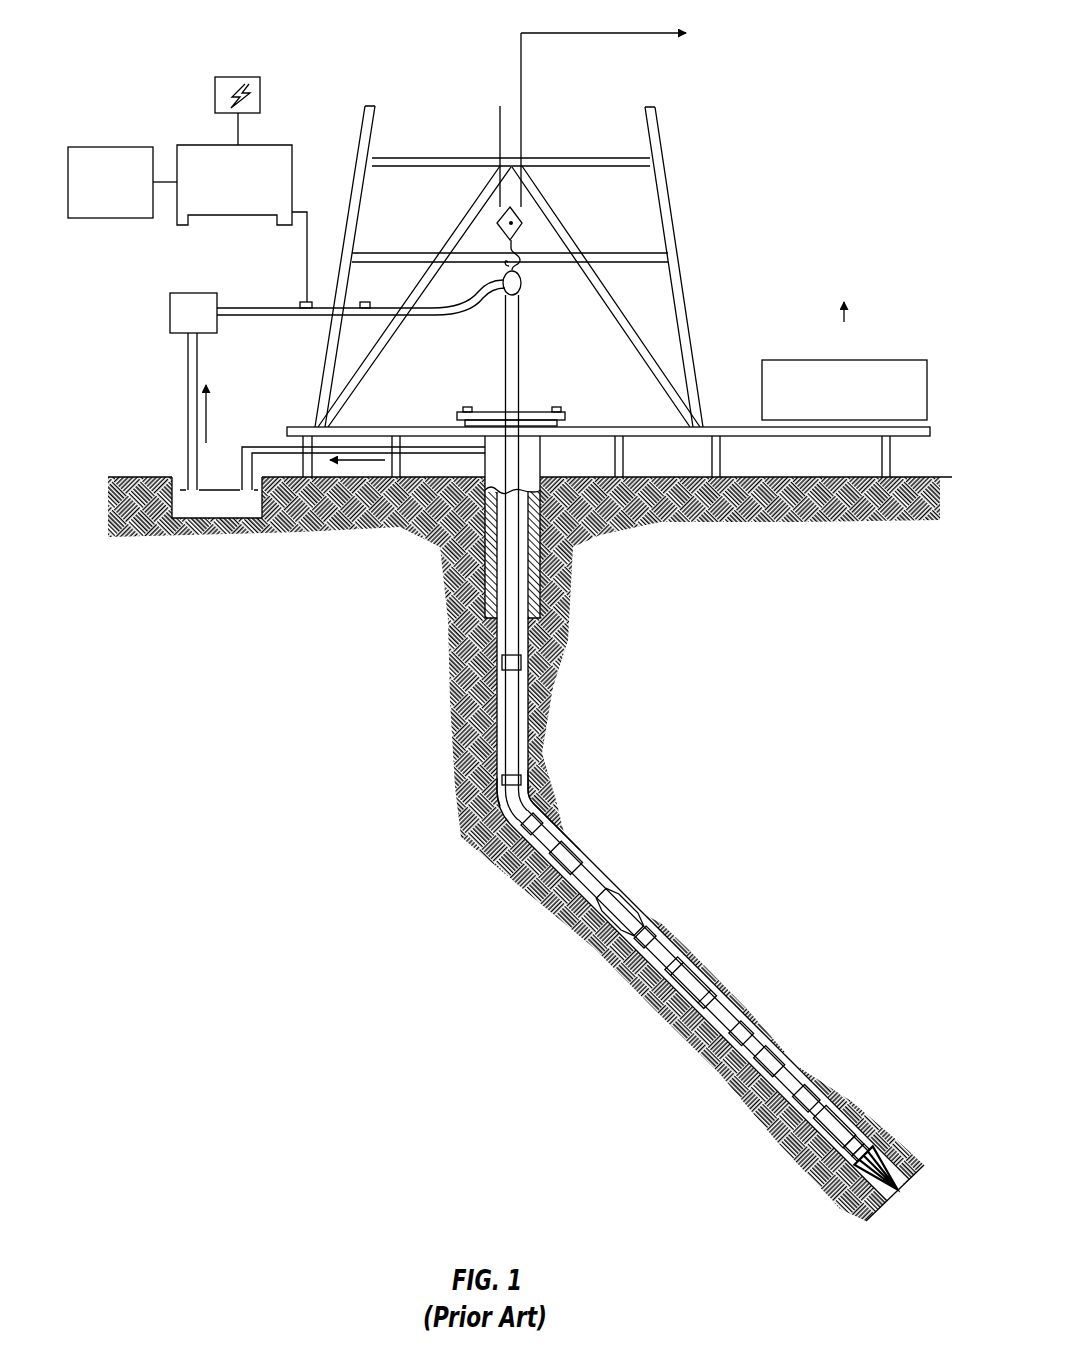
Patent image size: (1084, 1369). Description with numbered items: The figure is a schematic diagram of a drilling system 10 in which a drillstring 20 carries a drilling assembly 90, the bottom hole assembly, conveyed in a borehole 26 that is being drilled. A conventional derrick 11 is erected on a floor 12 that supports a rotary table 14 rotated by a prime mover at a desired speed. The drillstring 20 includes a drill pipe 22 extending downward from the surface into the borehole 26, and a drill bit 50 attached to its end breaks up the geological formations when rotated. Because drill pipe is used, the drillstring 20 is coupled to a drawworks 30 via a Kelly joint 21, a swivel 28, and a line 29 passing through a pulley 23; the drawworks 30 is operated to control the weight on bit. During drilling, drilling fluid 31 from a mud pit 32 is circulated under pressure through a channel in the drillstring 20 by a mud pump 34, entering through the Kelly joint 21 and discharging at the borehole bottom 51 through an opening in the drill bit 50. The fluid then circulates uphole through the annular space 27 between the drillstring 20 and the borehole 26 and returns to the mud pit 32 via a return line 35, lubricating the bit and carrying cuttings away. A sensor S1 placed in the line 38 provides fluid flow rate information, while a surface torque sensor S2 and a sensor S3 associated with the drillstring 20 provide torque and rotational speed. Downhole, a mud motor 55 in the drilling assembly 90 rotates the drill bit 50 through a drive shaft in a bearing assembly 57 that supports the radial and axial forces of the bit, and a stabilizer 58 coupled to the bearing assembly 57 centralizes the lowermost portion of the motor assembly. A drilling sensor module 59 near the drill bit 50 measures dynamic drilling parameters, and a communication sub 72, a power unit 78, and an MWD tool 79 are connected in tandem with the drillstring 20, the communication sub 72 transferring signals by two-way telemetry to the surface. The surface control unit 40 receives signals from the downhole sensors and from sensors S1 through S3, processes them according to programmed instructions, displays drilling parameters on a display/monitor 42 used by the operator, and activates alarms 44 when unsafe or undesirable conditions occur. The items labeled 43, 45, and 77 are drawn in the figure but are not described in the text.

The drilling system 10 is at (435, 42).
The derrick 11 is at (681, 268).
The floor 12 is at (707, 427).
The rotary table 14 is at (523, 410).
The drillstring 20 is at (533, 708).
The Kelly joint 21 is at (521, 322).
The drill pipe 22 is at (497, 693).
The pulley 23 is at (512, 223).
The borehole 26 is at (537, 808).
The annular space 27 is at (553, 840).
The swivel 28 is at (502, 292).
The line 29 is at (522, 125).
The drawworks 30 is at (888, 358).
The drilling fluid 31 is at (182, 487).
The mud pit 32 is at (208, 513).
The mud pump 34 is at (188, 292).
The return line 35 is at (447, 458).
The line 38 is at (303, 320).
The surface control unit 40 is at (216, 143).
The display/monitor 42 is at (240, 77).
The sensor 43 is at (303, 302).
The alarms 44 is at (118, 221).
The signal line 45 is at (297, 207).
The drill bit 50 is at (883, 1159).
The borehole bottom 51 is at (860, 1217).
The downhole motor 55 is at (726, 1005).
The bearing assembly 57 is at (851, 1105).
The stabilizer 58 is at (854, 1137).
The drilling sensor module 59 is at (840, 1159).
The communication sub 72 is at (497, 810).
The fluid flow arrow 77 is at (604, 941).
The power unit 78 is at (515, 853).
The MWD tool 79 is at (540, 880).
The drilling assembly 90 is at (754, 898).
The sensor S1 is at (362, 302).
The surface torque sensor S2 is at (557, 406).
The sensor S3 is at (470, 407).